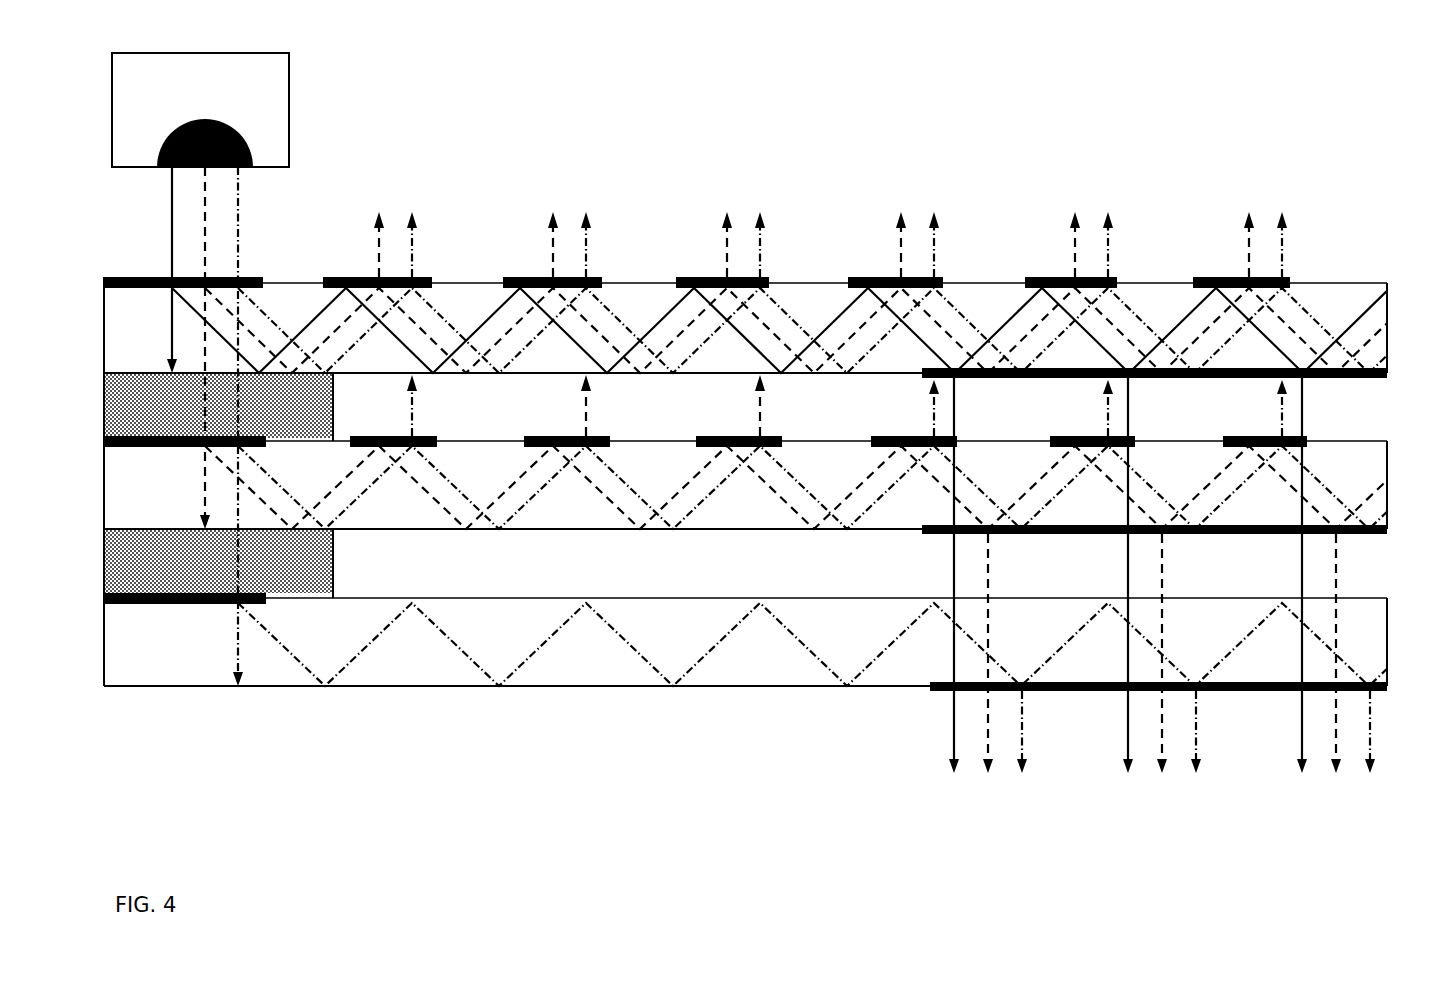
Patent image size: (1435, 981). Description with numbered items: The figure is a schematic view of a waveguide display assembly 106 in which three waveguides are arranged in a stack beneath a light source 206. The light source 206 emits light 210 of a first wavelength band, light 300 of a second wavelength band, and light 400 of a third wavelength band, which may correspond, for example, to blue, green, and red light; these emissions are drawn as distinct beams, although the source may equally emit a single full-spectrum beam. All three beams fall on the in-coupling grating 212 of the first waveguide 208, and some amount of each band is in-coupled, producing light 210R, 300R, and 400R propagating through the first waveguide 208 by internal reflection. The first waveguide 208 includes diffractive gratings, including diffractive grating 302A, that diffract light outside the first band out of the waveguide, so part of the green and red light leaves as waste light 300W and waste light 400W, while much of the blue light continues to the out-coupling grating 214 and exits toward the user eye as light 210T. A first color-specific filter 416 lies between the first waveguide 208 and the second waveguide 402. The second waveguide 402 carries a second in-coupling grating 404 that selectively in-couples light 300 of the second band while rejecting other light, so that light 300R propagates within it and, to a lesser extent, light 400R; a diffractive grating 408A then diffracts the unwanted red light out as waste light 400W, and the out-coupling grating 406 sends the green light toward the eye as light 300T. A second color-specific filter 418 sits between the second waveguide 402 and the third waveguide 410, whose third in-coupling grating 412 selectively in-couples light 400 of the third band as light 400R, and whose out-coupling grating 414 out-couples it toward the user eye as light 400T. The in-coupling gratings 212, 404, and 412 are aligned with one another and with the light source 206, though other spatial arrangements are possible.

The light source 206 is at (289, 76).
The waveguide display assembly 106 is at (366, 119).
The light of the first wavelength band 210 is at (172, 211).
The light of the second wavelength band 300 is at (205, 226).
The light of the third wavelength band 400 is at (238, 211).
The in-coupling grating 212 is at (120, 277).
The diffractive grating 302A is at (430, 278).
The first waveguide 208 is at (103, 335).
The out-coupling grating 214 is at (1370, 380).
The first color-specific filter 416 is at (103, 393).
The second in-coupling grating 404 is at (103, 440).
The second waveguide 402 is at (103, 510).
The diffractive grating 408A is at (352, 447).
The out-coupling grating 406 is at (1368, 535).
The second color-specific filter 418 is at (103, 560).
The third in-coupling grating 412 is at (103, 600).
The third waveguide 410 is at (103, 645).
The out-coupling grating 414 is at (932, 692).
The in-coupled light of the first wavelength band 210R is at (578, 350).
The in-coupled light of the second wavelength band 300R is at (656, 352).
The in-coupled light of the third wavelength band 400R is at (614, 308).
The waste light 300W is at (378, 262).
The waste light 400W is at (411, 250).
The out-coupled light of the first wavelength band 210T is at (1302, 398).
The out-coupled light of the second wavelength band 300T is at (990, 548).
The out-coupled light of the third wavelength band 400T is at (1024, 725).